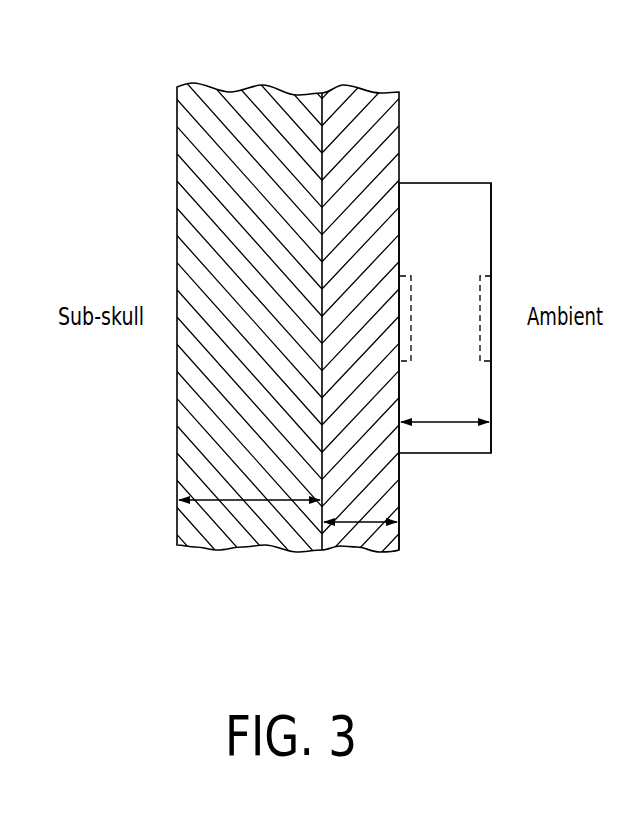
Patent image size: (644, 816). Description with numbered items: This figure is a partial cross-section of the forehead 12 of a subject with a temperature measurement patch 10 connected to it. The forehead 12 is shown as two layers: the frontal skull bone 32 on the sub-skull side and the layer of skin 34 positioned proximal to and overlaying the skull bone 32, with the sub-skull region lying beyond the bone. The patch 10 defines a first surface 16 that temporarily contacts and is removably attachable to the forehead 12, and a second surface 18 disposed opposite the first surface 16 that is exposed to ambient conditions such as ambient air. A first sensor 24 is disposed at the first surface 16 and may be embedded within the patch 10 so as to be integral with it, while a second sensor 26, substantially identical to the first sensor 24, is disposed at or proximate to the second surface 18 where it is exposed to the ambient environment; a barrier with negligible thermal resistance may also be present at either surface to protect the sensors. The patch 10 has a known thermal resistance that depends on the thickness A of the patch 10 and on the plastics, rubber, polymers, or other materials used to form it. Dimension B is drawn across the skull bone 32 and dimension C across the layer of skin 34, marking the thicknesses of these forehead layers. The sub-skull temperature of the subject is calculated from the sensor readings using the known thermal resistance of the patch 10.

The patch 10 is at (440, 183).
The forehead 12 is at (400, 70).
The first surface 16 is at (385, 452).
The second surface 18 is at (491, 243).
The first sensor 24 is at (411, 290).
The second sensor 26 is at (479, 346).
The frontal skull bone 32 is at (245, 548).
The layer of skin 34 is at (352, 548).
The thickness of the patch A is at (443, 422).
The inner skull layer thickness dimension B is at (223, 497).
The outer skull layer thickness dimension C is at (372, 523).